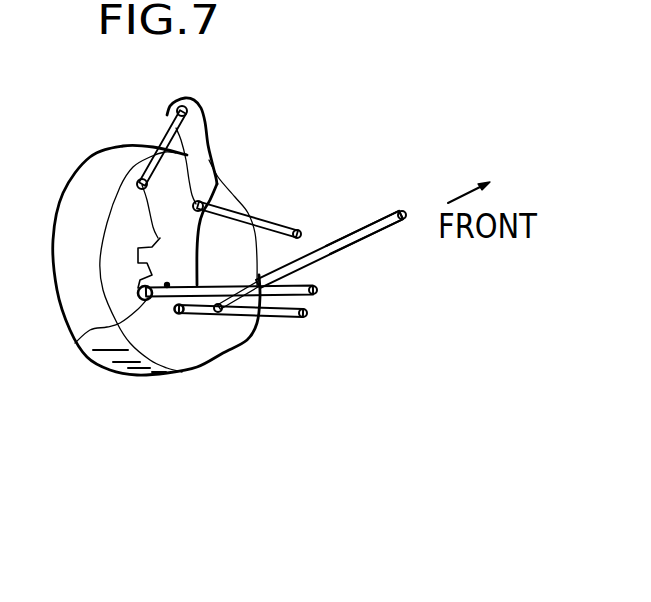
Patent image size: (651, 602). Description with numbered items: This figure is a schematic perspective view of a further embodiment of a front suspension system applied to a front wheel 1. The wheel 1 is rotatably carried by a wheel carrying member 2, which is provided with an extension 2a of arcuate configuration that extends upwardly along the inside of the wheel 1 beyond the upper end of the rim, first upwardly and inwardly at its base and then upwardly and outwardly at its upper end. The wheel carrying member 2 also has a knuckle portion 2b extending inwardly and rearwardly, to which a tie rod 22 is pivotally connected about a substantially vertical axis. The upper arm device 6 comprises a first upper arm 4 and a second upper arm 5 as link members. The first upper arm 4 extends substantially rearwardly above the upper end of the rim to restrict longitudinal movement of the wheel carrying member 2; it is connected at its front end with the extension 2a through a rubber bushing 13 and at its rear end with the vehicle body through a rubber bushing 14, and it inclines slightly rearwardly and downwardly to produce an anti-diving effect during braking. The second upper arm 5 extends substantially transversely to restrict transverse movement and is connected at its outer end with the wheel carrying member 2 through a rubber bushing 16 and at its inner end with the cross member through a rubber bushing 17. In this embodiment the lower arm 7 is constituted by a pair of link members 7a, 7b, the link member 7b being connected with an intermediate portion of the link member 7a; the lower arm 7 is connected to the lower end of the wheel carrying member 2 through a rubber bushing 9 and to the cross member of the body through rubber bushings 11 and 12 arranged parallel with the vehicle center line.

The front wheel 1 is at (86, 183).
The wheel carrying member 2 is at (165, 236).
The extension 2a is at (199, 131).
The knuckle portion 2b is at (94, 337).
The first upper arm 4 is at (165, 142).
The second upper arm 5 is at (259, 222).
The upper arm device 6 is at (242, 138).
The lower arm 7 is at (334, 246).
The link member 7a is at (272, 318).
The link member 7b is at (356, 245).
The rubber bushing 9 is at (180, 311).
The rubber bushing 11 is at (305, 318).
The rubber bushing 12 is at (402, 211).
The rubber bushing 13 is at (182, 105).
The rubber bushing 14 is at (139, 180).
The rubber bushing 16 is at (201, 201).
The rubber bushing 17 is at (297, 229).
The tie rod 22 is at (201, 300).